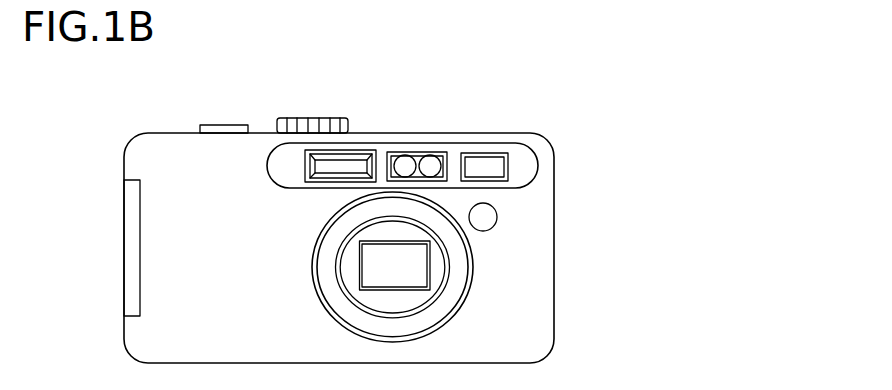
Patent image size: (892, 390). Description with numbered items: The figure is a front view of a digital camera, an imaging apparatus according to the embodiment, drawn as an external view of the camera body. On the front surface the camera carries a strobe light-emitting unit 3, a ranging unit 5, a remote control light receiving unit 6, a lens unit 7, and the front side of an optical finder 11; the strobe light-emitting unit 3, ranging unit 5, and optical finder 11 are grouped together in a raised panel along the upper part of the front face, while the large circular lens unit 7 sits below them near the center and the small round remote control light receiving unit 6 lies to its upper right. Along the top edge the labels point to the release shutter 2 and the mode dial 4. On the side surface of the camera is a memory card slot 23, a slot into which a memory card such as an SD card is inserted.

The release shutter (SW1) 2 is at (415, 62).
The strobe light-emitting unit 3 is at (360, 160).
The mode dial (SW2) 4 is at (300, 118).
The ranging unit 5 is at (442, 178).
The remote control light receiving unit 6 is at (716, 278).
The lens unit 7 is at (407, 297).
The optical finder (front side) 11 is at (757, 162).
The memory card slot 23 is at (232, 107).